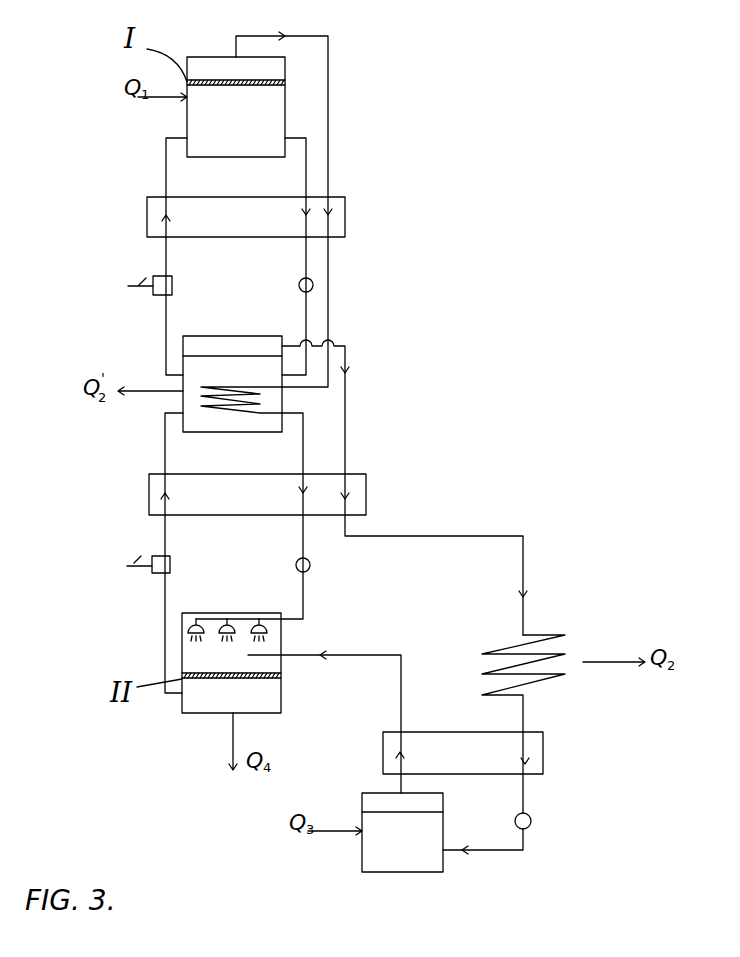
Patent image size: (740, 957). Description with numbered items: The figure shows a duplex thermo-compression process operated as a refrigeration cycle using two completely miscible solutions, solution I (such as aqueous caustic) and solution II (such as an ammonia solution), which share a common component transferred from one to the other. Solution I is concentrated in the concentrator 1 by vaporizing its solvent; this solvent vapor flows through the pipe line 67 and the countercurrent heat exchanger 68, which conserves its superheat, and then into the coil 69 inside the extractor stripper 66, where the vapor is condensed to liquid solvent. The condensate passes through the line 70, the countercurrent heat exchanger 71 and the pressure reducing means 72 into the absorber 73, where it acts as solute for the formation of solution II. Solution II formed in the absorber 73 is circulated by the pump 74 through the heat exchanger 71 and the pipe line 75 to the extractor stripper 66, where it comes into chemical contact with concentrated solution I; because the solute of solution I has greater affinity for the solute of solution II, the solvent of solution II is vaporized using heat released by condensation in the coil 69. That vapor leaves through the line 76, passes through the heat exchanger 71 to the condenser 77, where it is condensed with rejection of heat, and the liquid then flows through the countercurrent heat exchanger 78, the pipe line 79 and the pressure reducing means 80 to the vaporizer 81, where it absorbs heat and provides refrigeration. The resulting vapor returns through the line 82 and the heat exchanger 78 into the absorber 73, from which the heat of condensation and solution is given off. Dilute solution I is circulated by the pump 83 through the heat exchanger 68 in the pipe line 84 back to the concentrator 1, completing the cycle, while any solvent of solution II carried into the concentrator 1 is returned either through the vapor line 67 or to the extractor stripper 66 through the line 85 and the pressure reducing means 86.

The concentrator 1 is at (236, 107).
The extractor stripper 66 is at (243, 336).
The pipe line 67 is at (334, 97).
The countercurrent heat exchanger 68 is at (246, 217).
The coil 69 is at (246, 388).
The line 70 is at (303, 450).
The countercurrent heat exchanger 71 is at (257, 494).
The pressure reducing means 72 is at (297, 561).
The absorber 73 is at (231, 663).
The pump 74 is at (143, 553).
The pipe line 75 is at (165, 450).
The line 76 is at (346, 410).
The condenser 77 is at (496, 648).
The countercurrent heat exchanger 78 is at (463, 753).
The pipe line 79 is at (500, 850).
The pressure reducing means 80 is at (532, 817).
The vaporizer 81 is at (402, 832).
The line 82 is at (401, 695).
The pump 83 is at (145, 274).
The pipe line 84 is at (166, 168).
The line 85 is at (306, 175).
The pressure reducing means 86 is at (299, 285).